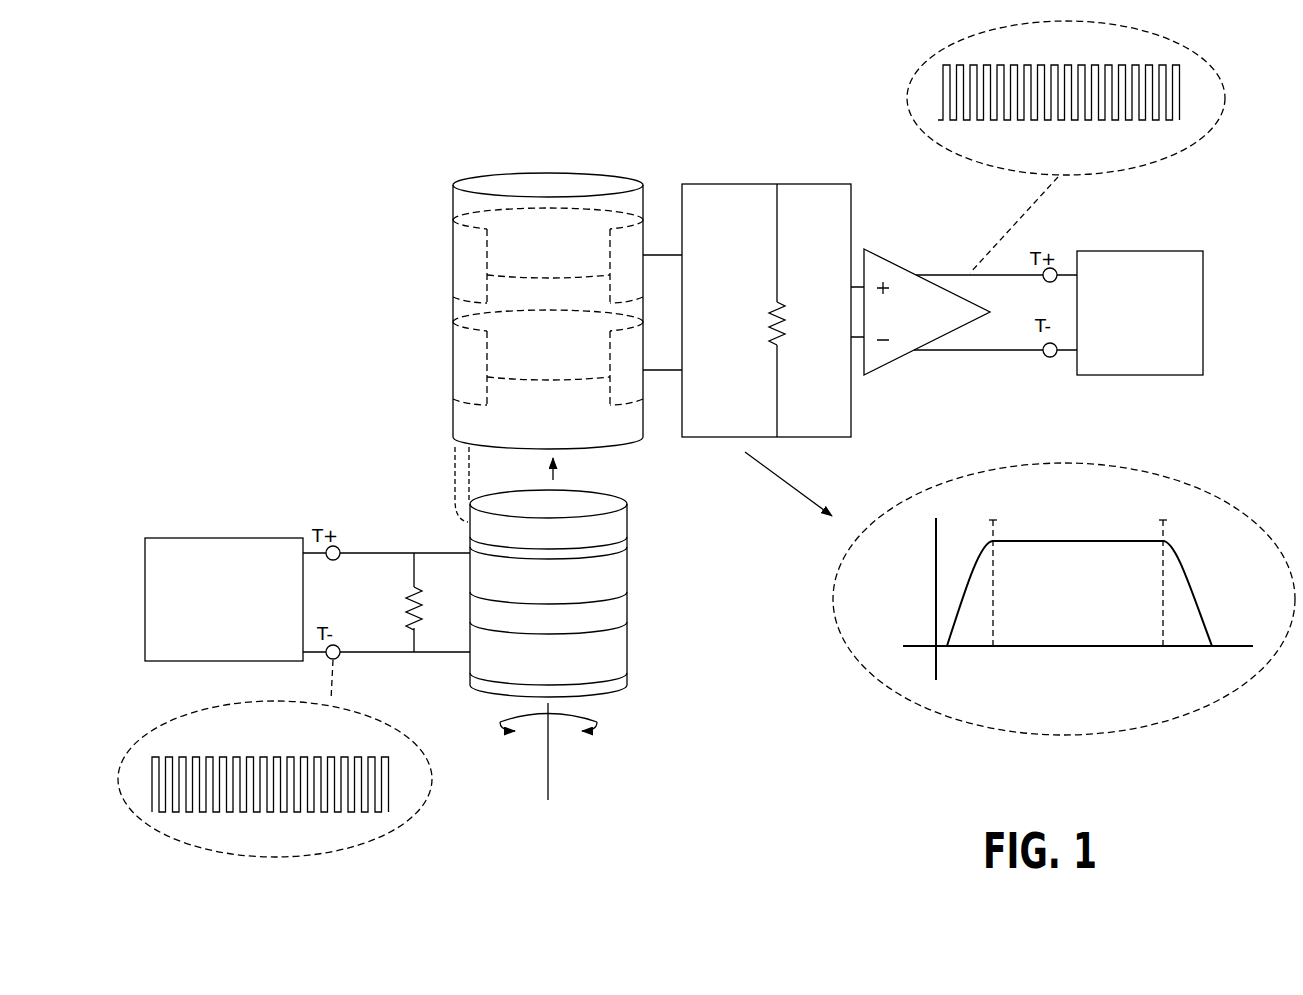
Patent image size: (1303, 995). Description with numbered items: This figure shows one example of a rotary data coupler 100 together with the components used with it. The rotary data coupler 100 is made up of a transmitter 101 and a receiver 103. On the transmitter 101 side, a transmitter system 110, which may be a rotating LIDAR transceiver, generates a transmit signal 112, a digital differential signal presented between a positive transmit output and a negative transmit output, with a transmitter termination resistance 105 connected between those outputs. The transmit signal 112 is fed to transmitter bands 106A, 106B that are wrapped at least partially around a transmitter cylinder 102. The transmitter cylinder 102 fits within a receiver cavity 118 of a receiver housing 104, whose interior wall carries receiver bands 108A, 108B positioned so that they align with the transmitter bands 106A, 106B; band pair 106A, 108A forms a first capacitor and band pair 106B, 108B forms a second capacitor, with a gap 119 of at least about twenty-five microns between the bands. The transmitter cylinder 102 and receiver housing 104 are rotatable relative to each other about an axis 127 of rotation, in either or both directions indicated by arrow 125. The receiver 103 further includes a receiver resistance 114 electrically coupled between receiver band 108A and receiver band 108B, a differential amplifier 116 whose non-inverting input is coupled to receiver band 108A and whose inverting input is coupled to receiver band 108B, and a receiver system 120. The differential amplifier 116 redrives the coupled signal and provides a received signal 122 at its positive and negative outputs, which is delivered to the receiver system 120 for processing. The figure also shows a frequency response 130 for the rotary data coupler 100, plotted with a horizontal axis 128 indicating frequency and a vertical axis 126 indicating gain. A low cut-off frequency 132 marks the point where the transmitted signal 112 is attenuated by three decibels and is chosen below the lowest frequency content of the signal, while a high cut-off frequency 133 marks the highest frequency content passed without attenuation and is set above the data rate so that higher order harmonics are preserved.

The rotary data coupler 100 is at (755, 108).
The transmitter 101 is at (770, 742).
The transmitter cylinder 102 is at (627, 512).
The receiver 103 is at (340, 168).
The receiver housing 104 is at (453, 195).
The transmitter termination resistance 105 is at (414, 592).
The transmitter band 106A is at (627, 563).
The transmitter band 106B is at (627, 641).
The receiver band 108A is at (487, 256).
The receiver band 108B is at (487, 361).
The transmitter system 110 is at (215, 538).
The transmit signal 112 is at (432, 778).
The receiver resistance 114 is at (777, 305).
The differential amplifier 116 is at (897, 258).
The receiver cavity 118 is at (553, 478).
The gap 119 is at (462, 528).
The receiver system 120 is at (1203, 310).
The received signal 122 is at (907, 98).
The arrow 125 is at (600, 718).
The vertical axis 126 is at (936, 585).
The axis of rotation 127 is at (548, 765).
The horizontal axis 128 is at (1060, 648).
The frequency response 130 is at (1197, 603).
The low cut-off frequency 132 is at (993, 520).
The high cut-off frequency 133 is at (1163, 520).